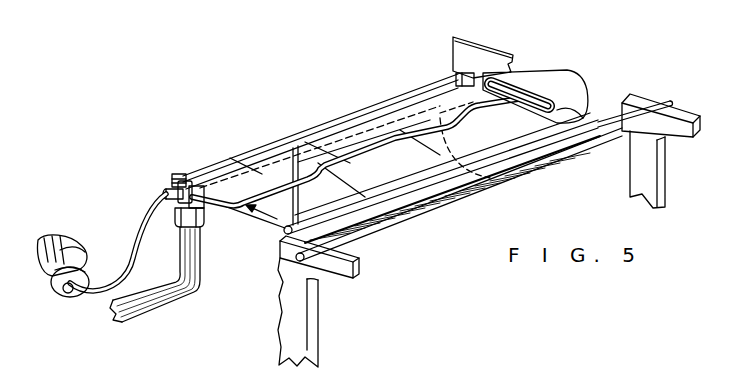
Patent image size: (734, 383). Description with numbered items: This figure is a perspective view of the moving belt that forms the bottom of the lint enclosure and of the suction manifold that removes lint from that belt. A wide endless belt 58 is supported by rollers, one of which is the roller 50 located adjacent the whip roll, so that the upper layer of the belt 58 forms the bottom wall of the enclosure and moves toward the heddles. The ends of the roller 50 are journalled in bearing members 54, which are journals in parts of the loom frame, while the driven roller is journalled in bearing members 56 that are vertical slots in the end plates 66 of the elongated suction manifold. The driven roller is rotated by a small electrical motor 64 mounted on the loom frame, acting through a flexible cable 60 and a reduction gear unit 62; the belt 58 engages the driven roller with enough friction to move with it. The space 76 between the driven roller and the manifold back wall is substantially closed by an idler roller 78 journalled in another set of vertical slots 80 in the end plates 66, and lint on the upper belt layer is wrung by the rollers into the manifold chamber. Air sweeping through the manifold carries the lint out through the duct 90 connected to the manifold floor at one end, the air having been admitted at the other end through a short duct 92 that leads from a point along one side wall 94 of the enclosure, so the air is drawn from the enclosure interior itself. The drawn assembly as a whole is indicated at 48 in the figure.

The heater assembly 48 is at (264, 232).
The roller 50 is at (630, 122).
The bearing members 54 is at (357, 257).
The bearing members 56 is at (158, 205).
The endless belt 58 is at (364, 181).
The flexible cable 60 is at (140, 243).
The reduction gear unit 62 is at (55, 292).
The electrical motor 64 is at (58, 238).
The end plates 66 is at (186, 207).
The space 76 is at (387, 93).
The idler roller 78 is at (315, 128).
The vertical slots 80 is at (170, 181).
The duct 90 is at (202, 288).
The short duct 92 is at (577, 97).
The side wall 94 is at (490, 60).